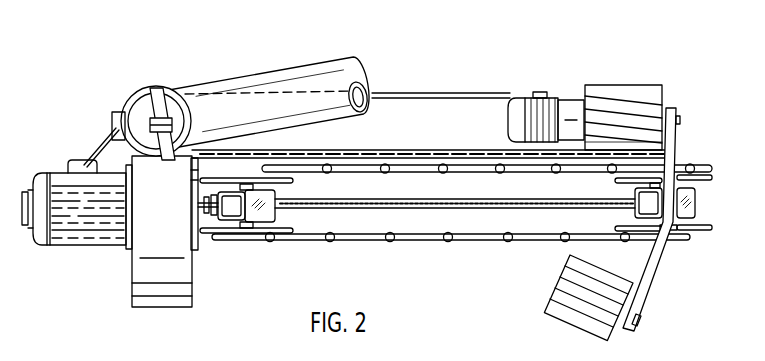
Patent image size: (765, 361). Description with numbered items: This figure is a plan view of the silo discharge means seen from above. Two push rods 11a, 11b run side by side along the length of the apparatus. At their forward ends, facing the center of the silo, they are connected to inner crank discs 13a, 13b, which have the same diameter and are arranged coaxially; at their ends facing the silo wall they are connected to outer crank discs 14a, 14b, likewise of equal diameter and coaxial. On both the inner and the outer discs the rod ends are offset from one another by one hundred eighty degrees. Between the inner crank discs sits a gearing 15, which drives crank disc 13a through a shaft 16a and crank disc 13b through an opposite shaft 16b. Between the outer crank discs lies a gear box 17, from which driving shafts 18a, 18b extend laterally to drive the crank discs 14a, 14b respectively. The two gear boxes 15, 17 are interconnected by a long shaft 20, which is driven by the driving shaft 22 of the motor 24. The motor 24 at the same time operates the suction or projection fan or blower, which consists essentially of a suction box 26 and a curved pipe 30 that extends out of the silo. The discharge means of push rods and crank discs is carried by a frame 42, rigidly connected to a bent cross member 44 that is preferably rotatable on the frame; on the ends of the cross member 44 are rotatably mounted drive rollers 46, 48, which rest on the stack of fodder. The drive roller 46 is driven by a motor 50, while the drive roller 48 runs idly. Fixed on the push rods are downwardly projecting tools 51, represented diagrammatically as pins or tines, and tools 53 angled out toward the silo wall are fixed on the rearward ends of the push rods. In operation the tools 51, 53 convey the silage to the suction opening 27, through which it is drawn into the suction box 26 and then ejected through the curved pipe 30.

The push rod 11a is at (425, 241).
The push rod 11b is at (430, 165).
The crank disc 13a is at (205, 236).
The crank disc 13b is at (205, 180).
The crank disc 14a is at (677, 231).
The crank disc 14b is at (692, 210).
The gearing 15 is at (275, 205).
The shaft 16a is at (252, 230).
The shaft 16b is at (252, 186).
The gear box 17 is at (700, 232).
The driving shaft 18a is at (645, 235).
The driving shaft 18b is at (620, 181).
The shaft 20 is at (457, 208).
The driving shaft 22 is at (198, 206).
The motor 24 is at (72, 245).
The suction box 26 is at (135, 288).
The suction opening 27 is at (197, 250).
The curved pipe 30 is at (368, 76).
The frame 42 is at (400, 152).
The cross member 44 is at (680, 125).
The drive roller 46 is at (612, 88).
The drive roller 48 is at (555, 316).
The motor 50 is at (514, 120).
The tools 51 is at (388, 173).
The tools 53 is at (706, 172).